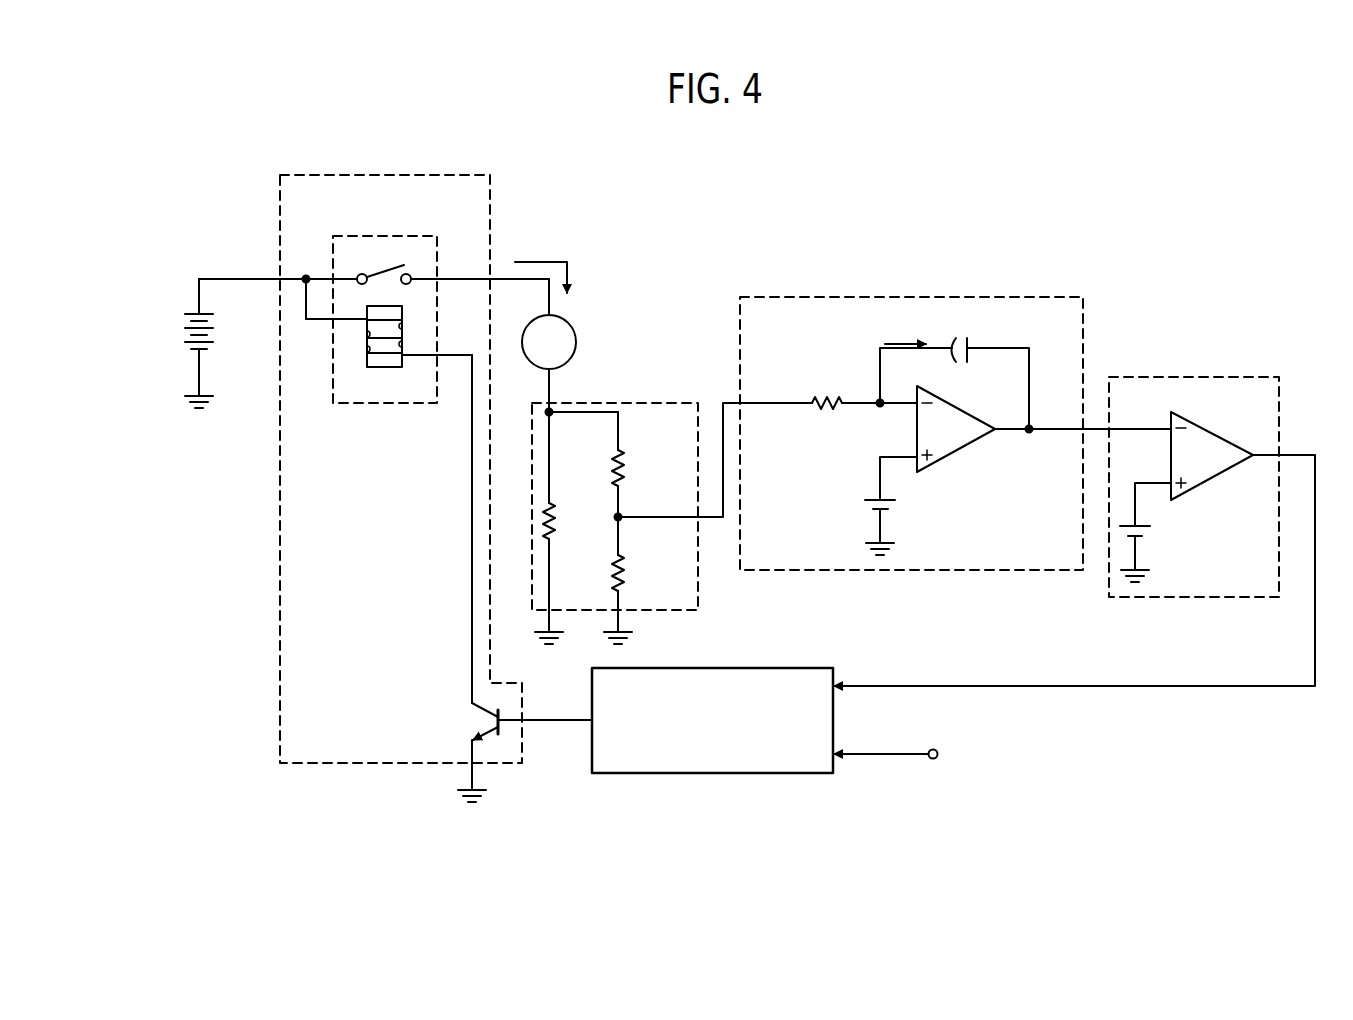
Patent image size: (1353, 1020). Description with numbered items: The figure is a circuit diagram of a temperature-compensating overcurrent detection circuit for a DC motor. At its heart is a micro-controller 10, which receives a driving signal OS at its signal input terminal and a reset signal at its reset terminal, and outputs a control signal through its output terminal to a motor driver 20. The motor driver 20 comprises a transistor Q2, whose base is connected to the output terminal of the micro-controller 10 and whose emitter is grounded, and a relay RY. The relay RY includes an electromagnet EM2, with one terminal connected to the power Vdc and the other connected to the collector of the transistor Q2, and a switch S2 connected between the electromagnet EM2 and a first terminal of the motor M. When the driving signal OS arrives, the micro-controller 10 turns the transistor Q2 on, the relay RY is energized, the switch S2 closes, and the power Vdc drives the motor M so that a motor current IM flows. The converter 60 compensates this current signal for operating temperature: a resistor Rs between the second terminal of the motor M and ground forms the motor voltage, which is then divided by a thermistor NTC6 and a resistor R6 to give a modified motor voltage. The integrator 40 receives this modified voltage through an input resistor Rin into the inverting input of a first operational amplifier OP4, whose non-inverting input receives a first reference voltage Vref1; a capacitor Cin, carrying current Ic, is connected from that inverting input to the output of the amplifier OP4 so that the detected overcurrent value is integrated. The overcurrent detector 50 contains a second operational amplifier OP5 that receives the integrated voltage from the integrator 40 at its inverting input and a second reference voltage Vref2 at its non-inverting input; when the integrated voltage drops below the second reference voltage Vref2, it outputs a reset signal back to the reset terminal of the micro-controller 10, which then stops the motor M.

The micro-controller 10 is at (712, 773).
The motor driver 20 is at (280, 218).
The integrator 40 is at (933, 296).
The overcurrent detector 50 is at (1190, 377).
The converter 60 is at (657, 403).
The relay RY is at (385, 236).
The switch S2 is at (384, 262).
The electromagnet EM2 is at (381, 353).
The transistor Q2 is at (518, 752).
The motor M is at (549, 342).
The motor current IM is at (555, 278).
The power Vdc is at (176, 343).
The resistor Rs is at (560, 528).
The thermistor NTC6 is at (647, 468).
The resistor R6 is at (629, 599).
The input resistor Rin is at (830, 392).
The capacitor Cin is at (960, 337).
The capacitor current Ic is at (905, 331).
The first operational amplifier OP4 is at (962, 455).
The first reference voltage Vref1 is at (854, 506).
The second operational amplifier OP5 is at (1228, 418).
The second reference voltage Vref2 is at (1173, 532).
The driving signal OS is at (907, 758).